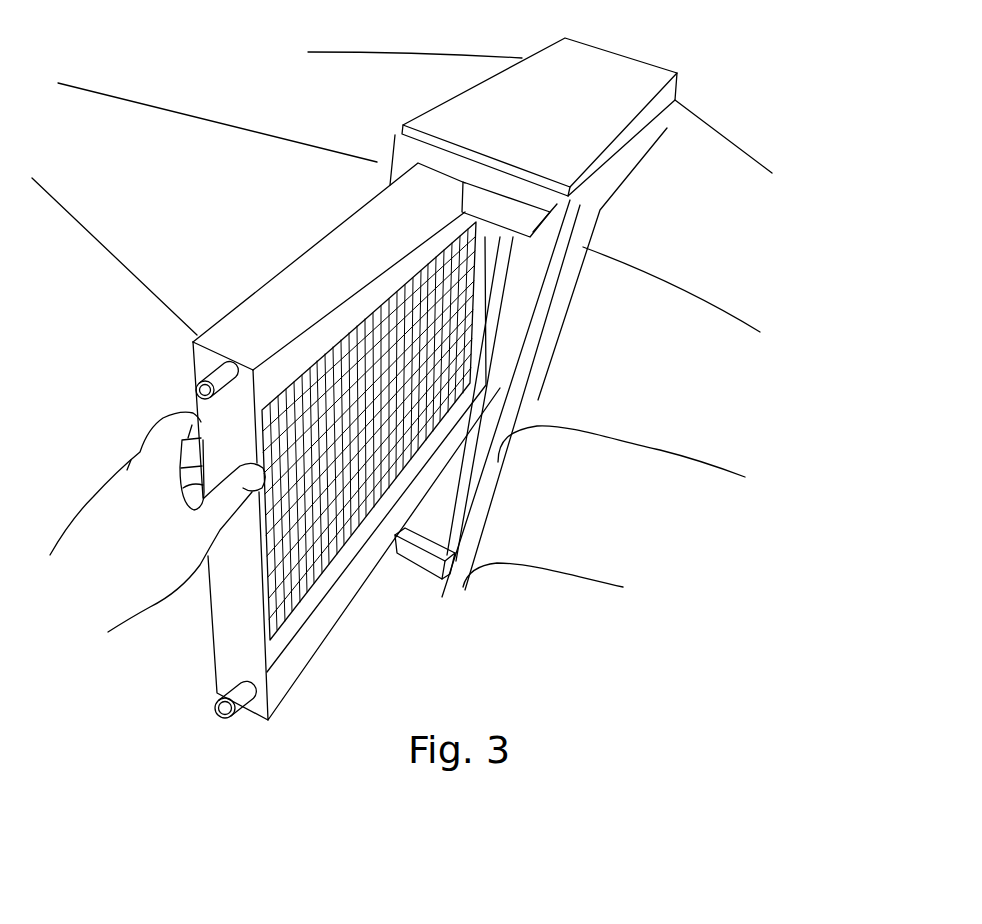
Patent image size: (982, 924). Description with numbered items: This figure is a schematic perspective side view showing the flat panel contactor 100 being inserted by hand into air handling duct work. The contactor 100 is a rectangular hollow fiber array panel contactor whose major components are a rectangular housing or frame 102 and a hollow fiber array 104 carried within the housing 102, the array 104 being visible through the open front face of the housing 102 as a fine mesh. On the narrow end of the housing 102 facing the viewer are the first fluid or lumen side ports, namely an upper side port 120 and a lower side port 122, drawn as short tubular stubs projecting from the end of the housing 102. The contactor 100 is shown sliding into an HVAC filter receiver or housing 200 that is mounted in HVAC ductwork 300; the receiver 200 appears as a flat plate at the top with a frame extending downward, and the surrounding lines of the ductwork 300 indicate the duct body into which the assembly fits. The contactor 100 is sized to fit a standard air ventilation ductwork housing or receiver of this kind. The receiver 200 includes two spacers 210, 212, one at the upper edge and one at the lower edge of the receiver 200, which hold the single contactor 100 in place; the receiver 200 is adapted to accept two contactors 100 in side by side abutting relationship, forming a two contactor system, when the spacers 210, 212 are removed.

The flat panel contactor 100 is at (227, 632).
The housing 102 is at (291, 286).
The hollow fiber array 104 is at (337, 523).
The upper side port 120 is at (217, 373).
The lower side port 122 is at (252, 710).
The HVAC filter receiver 200 is at (597, 82).
The spacer 210 is at (505, 212).
The spacer 212 is at (438, 528).
The HVAC ductwork 300 is at (695, 180).